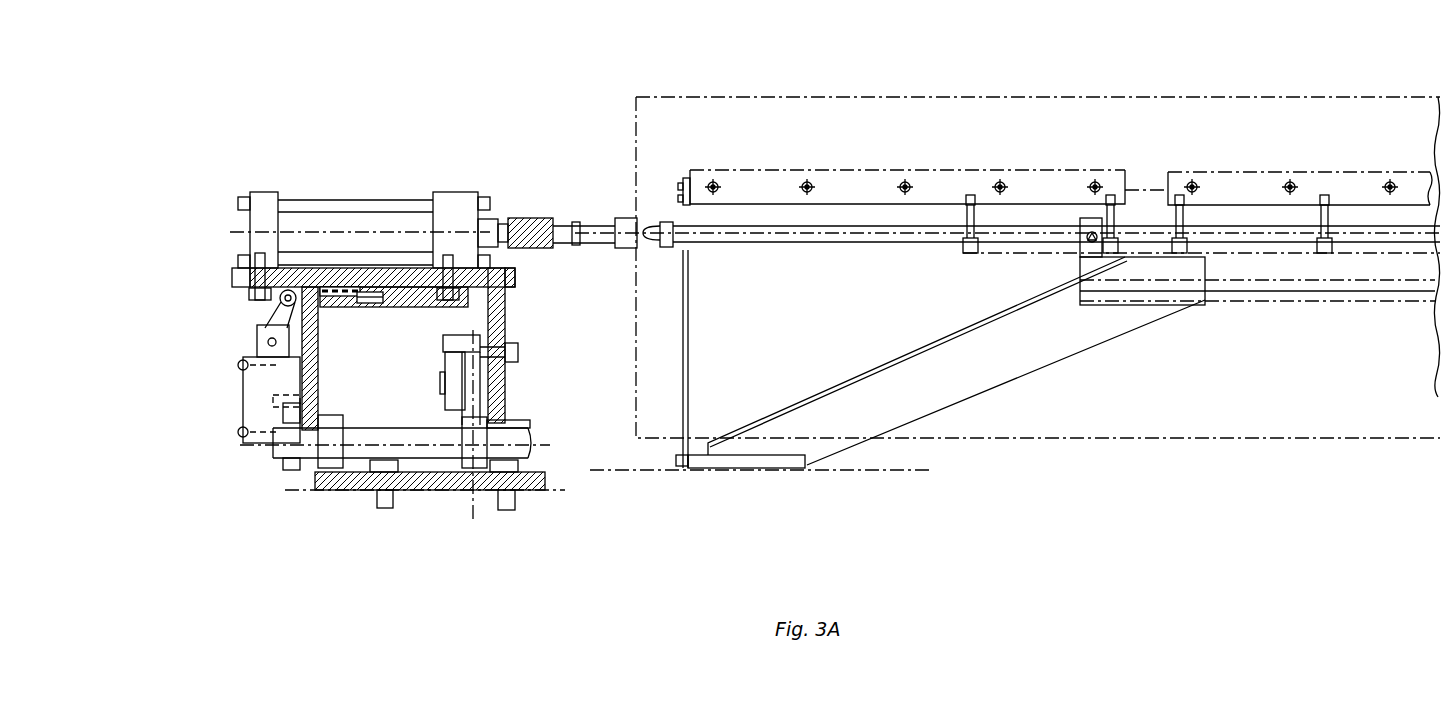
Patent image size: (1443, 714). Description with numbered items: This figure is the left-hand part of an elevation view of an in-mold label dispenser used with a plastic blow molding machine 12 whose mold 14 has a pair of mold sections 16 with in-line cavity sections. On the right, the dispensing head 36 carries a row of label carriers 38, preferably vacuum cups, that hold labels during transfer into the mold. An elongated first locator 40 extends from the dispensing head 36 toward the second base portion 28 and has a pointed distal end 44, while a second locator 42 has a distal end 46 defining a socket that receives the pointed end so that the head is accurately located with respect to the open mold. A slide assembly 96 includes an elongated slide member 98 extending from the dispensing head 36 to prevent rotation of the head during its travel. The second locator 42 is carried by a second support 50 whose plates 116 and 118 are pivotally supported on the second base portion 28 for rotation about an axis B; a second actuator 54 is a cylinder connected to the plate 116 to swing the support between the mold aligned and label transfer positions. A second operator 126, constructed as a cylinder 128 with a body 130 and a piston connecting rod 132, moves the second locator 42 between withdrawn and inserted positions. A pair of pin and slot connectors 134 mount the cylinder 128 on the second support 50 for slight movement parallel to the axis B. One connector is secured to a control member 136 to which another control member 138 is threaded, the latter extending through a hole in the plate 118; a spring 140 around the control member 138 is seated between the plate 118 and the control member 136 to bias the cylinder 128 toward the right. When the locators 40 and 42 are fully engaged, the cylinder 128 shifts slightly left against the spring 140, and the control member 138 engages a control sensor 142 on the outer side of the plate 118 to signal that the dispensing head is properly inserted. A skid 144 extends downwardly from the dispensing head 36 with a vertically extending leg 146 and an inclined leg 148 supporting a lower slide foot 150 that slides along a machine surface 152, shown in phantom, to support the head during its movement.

The plastic blow molding machine 12 is at (646, 53).
The mold 14 is at (642, 96).
The mold section 16 is at (718, 100).
The second base portion 28 is at (455, 490).
The dispensing head 36 is at (1178, 169).
The label carrier 38 is at (718, 182).
The first locator 40 is at (842, 246).
The second locator 42 is at (529, 216).
The distal end 44 is at (657, 244).
The distal end 46 is at (577, 220).
The second support 50 is at (512, 330).
The second actuator 54 is at (440, 382).
The slide assembly 96 is at (1208, 306).
The elongated slide member 98 is at (1333, 300).
The plate 116 is at (506, 383).
The plate 118 is at (318, 384).
The second operator 126 is at (356, 200).
The cylinder 128 is at (311, 200).
The body 130 is at (396, 214).
The piston connecting rod 132 is at (499, 218).
The pin and slot connector 134 is at (250, 284).
The control member 136 is at (418, 298).
The control member 138 is at (328, 302).
The spring 140 is at (338, 306).
The control sensor 142 is at (262, 430).
The skid 144 is at (681, 363).
The vertically extending leg 146 is at (690, 341).
The inclined leg 148 is at (978, 373).
The slide foot 150 is at (782, 469).
The machine surface 152 is at (900, 470).
The axis B is at (358, 472).